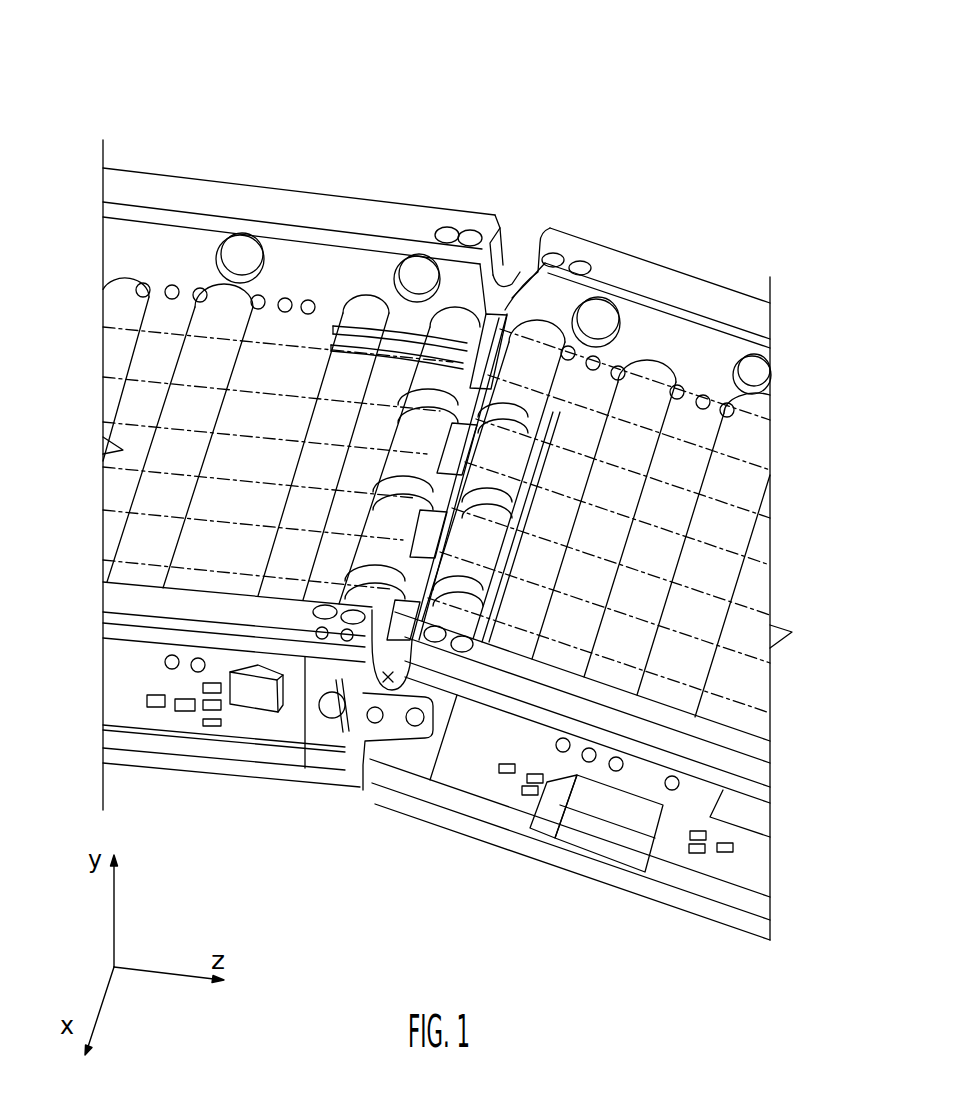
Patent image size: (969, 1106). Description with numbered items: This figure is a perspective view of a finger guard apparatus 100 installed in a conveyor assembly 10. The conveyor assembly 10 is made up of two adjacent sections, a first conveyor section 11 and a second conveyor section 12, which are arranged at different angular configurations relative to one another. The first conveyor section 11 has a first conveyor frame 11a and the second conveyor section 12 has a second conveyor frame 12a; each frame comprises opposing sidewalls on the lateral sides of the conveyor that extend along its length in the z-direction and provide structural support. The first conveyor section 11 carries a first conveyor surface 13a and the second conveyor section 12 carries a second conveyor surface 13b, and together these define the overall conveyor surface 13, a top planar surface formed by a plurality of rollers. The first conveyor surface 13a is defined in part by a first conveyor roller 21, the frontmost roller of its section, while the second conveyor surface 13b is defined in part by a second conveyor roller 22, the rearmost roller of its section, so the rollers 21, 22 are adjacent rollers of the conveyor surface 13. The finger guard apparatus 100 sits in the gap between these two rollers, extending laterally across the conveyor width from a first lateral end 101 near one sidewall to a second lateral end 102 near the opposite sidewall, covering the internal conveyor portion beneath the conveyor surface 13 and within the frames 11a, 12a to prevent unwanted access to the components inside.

The conveyor assembly 10 is at (475, 58).
The first conveyor section 11 is at (274, 130).
The first conveyor frame 11a is at (172, 197).
The second conveyor section 12 is at (675, 212).
The second conveyor frame 12a is at (735, 337).
The conveyor surface 13 is at (235, 451).
The first conveyor surface 13a is at (172, 358).
The second conveyor surface 13b is at (710, 620).
The first conveyor roller 21 is at (452, 325).
The second conveyor roller 22 is at (537, 360).
The finger guard apparatus 100 is at (502, 312).
The first lateral end 101 is at (507, 305).
The second lateral end 102 is at (385, 683).